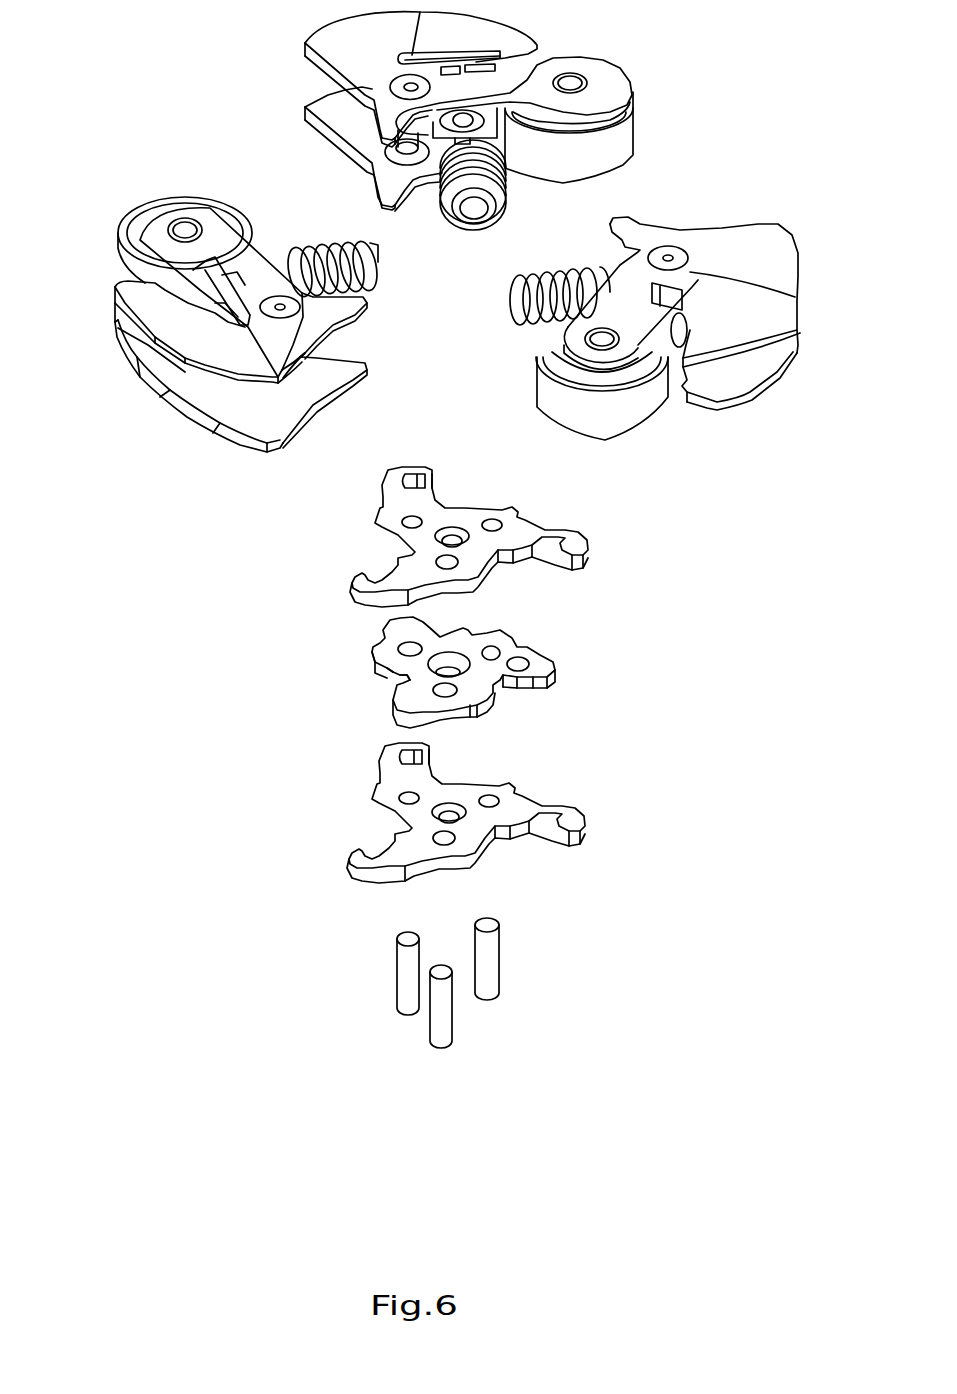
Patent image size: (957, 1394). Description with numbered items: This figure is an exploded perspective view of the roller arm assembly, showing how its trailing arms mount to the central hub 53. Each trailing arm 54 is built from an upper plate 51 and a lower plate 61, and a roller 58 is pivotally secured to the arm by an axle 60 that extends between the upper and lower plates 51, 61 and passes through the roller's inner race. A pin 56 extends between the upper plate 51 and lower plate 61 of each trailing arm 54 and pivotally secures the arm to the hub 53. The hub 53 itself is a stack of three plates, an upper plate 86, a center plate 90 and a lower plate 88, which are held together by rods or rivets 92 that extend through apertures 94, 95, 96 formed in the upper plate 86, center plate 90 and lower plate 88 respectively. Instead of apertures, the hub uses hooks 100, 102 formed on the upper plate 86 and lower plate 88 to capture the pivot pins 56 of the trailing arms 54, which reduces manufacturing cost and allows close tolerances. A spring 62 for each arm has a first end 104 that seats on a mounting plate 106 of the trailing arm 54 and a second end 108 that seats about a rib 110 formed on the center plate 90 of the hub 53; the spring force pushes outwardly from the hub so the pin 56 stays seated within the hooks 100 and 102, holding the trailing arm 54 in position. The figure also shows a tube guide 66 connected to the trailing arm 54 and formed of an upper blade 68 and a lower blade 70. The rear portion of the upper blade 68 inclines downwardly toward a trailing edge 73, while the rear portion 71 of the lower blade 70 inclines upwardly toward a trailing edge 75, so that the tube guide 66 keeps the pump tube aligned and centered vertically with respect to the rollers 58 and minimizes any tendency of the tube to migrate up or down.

The upper plate 51 is at (203, 217).
The central hub 53 is at (213, 716).
The trailing arm 54 is at (263, 258).
The pin 56 is at (268, 297).
The roller 58 is at (120, 250).
The axle 60 is at (140, 210).
The lower plate 61 is at (317, 377).
The spring 62 is at (318, 252).
The tube guide 66 is at (133, 398).
The upper blade 68 is at (200, 347).
The lower blade 70 is at (243, 423).
The rear portion 71 is at (130, 353).
The trailing edge 73 is at (115, 285).
The trailing edge 75 is at (123, 330).
The upper plate 86 is at (535, 537).
The lower plate 88 is at (533, 810).
The center plate 90 is at (533, 663).
The rods or rivets 92 is at (476, 983).
The aperture 94 is at (488, 523).
The aperture 95 is at (492, 653).
The aperture 96 is at (490, 798).
The hook 100 is at (417, 470).
The hook 102 is at (350, 877).
The first end 104 is at (305, 338).
The mounting plate 106 is at (213, 303).
The second end 108 is at (380, 265).
The rib 110 is at (473, 630).